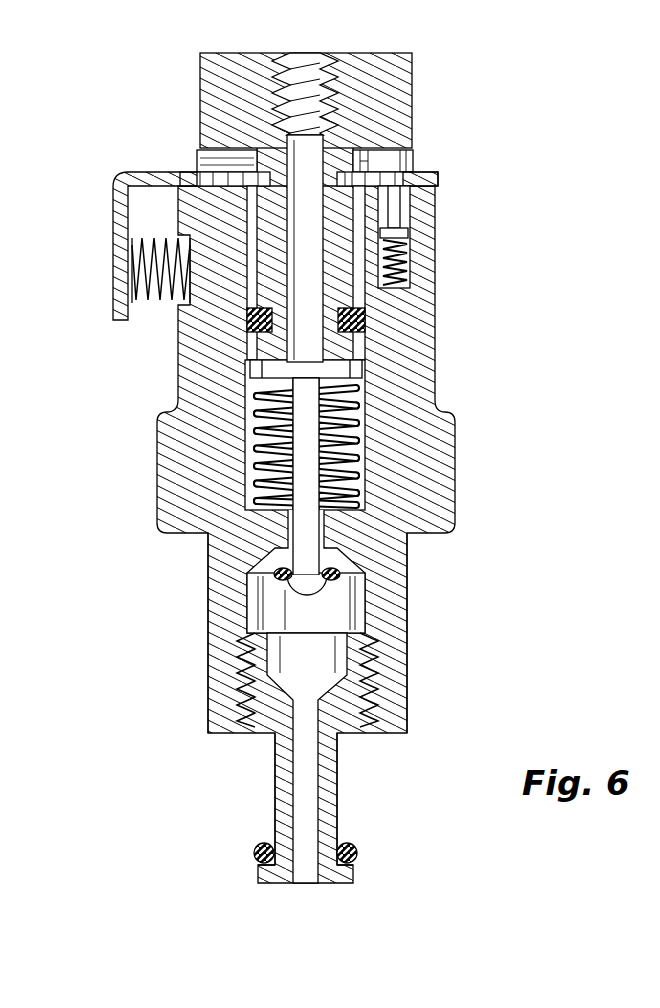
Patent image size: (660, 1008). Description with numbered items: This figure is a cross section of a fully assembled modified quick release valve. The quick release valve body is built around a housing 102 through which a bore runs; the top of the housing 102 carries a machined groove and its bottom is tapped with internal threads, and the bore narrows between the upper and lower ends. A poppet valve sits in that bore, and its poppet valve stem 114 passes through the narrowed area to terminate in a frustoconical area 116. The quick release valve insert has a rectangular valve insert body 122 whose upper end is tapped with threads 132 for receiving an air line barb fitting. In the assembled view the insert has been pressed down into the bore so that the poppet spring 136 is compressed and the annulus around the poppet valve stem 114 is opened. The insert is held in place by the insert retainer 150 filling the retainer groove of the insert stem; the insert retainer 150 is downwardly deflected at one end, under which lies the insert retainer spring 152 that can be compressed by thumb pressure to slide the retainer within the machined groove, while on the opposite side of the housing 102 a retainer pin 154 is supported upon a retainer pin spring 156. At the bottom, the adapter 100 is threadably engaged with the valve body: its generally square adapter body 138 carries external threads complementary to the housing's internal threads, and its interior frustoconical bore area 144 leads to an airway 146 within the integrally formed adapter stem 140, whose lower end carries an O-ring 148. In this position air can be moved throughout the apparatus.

The adapter 100 is at (314, 460).
The housing 102 is at (437, 410).
The poppet valve stem 114 is at (320, 542).
The frustoconical area 116 is at (335, 618).
The valve insert body 122 is at (388, 96).
The threads 132 is at (308, 57).
The poppet spring 136 is at (270, 447).
The adapter body 138 is at (348, 735).
The adapter stem 140 is at (330, 788).
The frustoconical bore area 144 is at (318, 658).
The airway 146 is at (312, 875).
The O-ring 148 is at (352, 845).
The insert retainer 150 is at (150, 172).
The insert retainer spring 152 is at (170, 305).
The retainer pin 154 is at (420, 158).
The retainer pin spring 156 is at (412, 280).